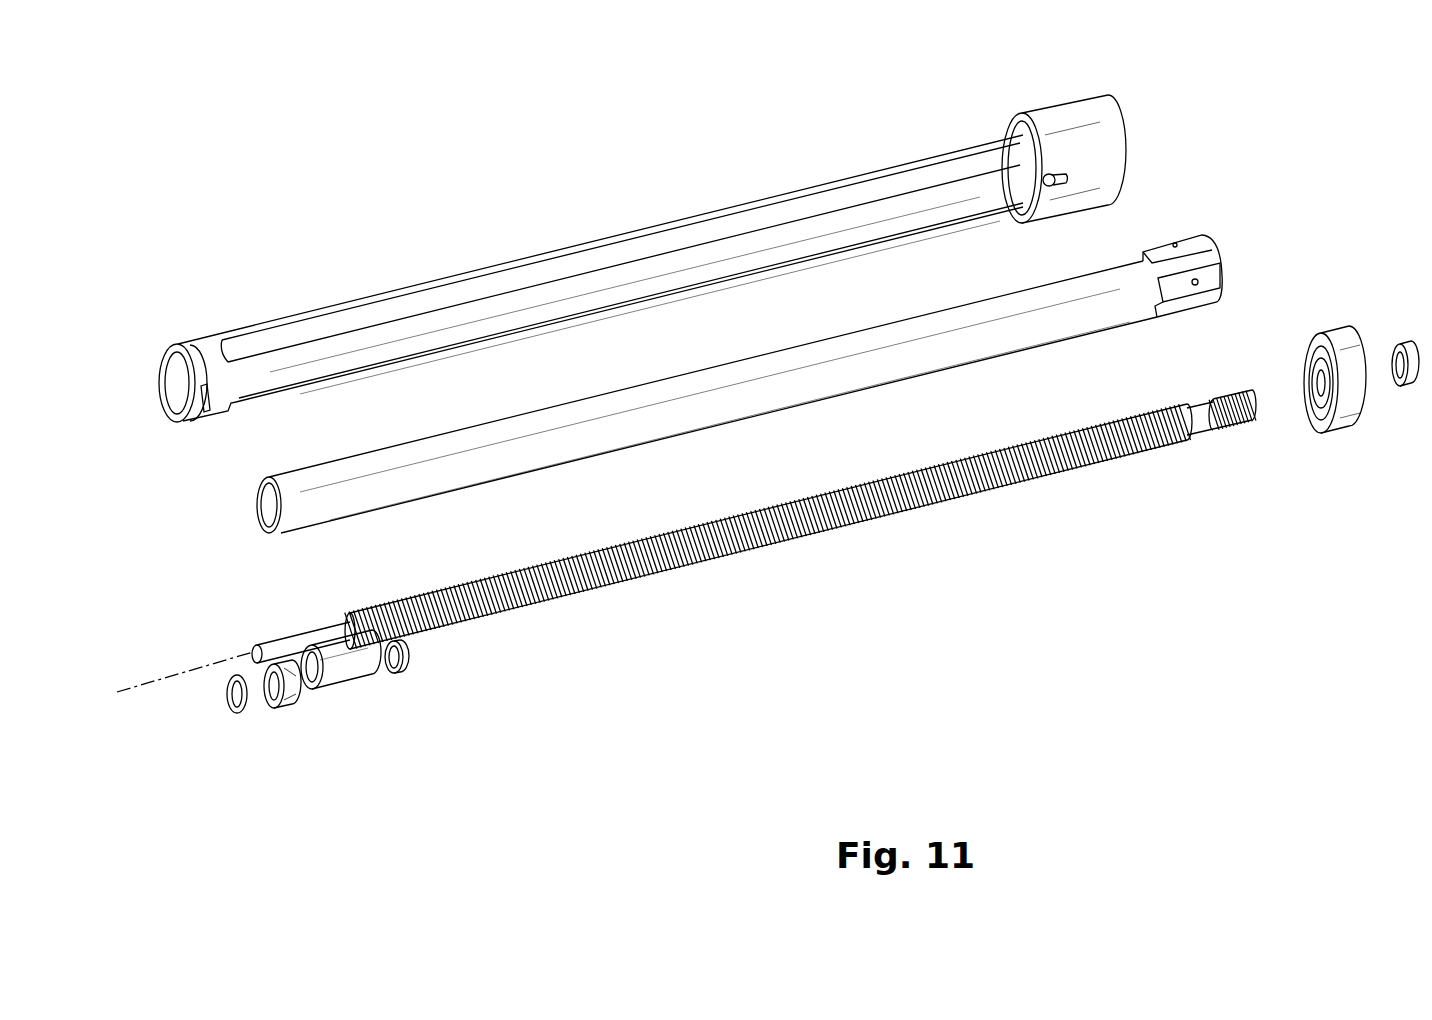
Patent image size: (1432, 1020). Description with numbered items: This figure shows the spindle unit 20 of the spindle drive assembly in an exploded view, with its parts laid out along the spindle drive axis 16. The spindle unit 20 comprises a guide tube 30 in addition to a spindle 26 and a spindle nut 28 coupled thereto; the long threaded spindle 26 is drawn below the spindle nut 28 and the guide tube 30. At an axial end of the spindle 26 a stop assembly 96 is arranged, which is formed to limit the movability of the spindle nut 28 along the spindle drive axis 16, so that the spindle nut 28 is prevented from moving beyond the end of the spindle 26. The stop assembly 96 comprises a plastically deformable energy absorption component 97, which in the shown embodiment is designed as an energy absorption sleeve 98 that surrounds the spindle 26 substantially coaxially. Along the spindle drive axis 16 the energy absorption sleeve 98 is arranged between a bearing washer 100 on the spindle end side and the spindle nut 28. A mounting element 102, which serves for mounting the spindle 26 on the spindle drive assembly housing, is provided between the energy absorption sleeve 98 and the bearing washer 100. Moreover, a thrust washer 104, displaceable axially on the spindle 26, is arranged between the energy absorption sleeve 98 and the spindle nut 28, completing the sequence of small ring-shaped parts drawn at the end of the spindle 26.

The spindle drive axis 16 is at (163, 678).
The spindle unit 20 is at (697, 184).
The spindle 26 is at (853, 523).
The spindle nut 28 is at (1199, 218).
The guide tube 30 is at (919, 161).
The stop assembly 96 is at (332, 721).
The plastically deformable energy absorption component 97 is at (343, 658).
The energy absorption sleeve 98 is at (354, 721).
The bearing washer 100 is at (236, 713).
The mounting element 102 is at (290, 703).
The thrust washer 104 is at (374, 701).